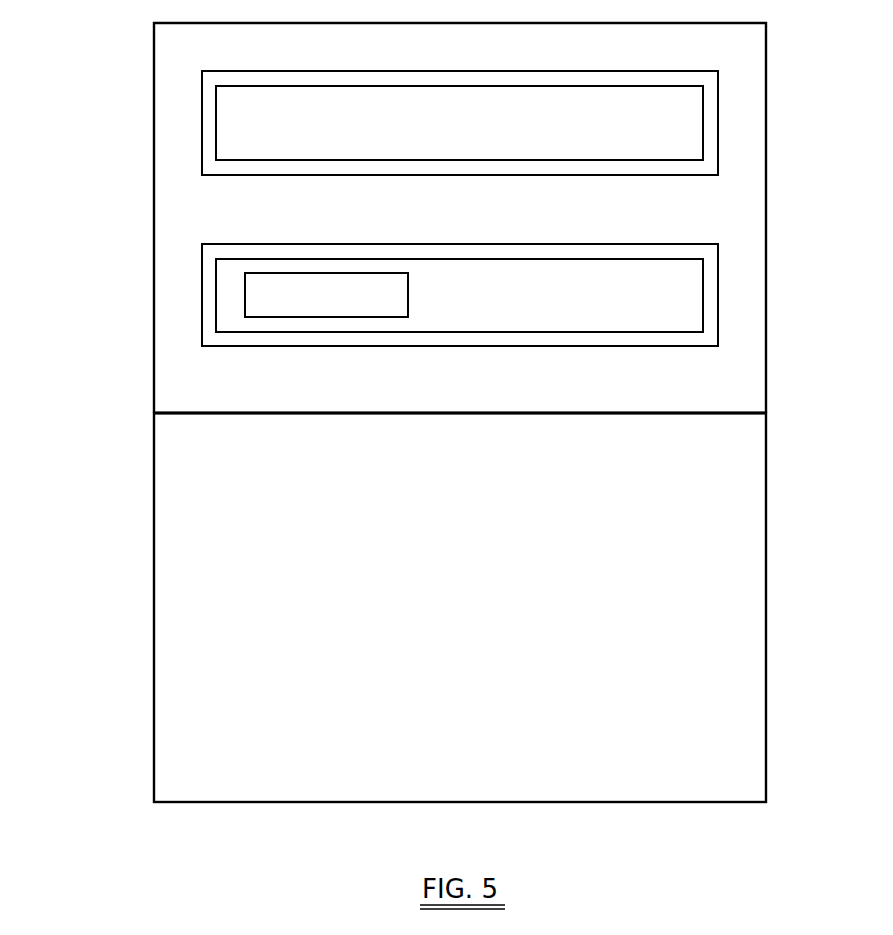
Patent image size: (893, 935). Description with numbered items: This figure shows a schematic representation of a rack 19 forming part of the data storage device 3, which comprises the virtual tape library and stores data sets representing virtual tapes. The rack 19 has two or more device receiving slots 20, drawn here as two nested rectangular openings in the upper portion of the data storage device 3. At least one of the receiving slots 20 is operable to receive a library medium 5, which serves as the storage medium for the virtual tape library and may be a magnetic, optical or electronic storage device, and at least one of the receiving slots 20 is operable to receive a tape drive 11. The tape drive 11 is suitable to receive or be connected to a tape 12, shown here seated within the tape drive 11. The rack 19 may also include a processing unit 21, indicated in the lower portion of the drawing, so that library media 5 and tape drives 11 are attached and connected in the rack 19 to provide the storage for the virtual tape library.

The data storage device 3 is at (109, 127).
The library medium 5 is at (459, 123).
The tape drive 11 is at (459, 295).
The tape 12 is at (326, 295).
The rack 19 is at (154, 398).
The device receiving slot 20 is at (718, 123).
The processing unit 21 is at (288, 782).